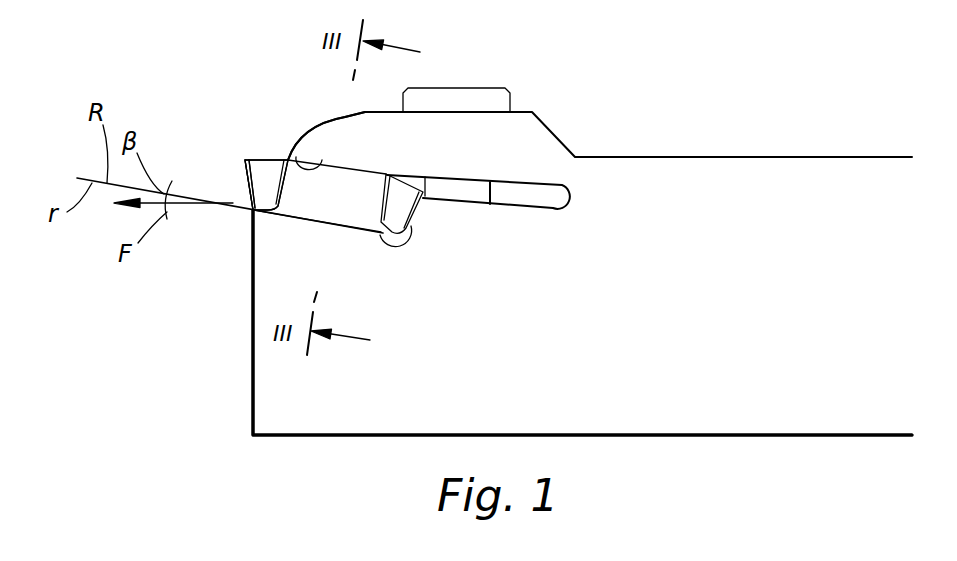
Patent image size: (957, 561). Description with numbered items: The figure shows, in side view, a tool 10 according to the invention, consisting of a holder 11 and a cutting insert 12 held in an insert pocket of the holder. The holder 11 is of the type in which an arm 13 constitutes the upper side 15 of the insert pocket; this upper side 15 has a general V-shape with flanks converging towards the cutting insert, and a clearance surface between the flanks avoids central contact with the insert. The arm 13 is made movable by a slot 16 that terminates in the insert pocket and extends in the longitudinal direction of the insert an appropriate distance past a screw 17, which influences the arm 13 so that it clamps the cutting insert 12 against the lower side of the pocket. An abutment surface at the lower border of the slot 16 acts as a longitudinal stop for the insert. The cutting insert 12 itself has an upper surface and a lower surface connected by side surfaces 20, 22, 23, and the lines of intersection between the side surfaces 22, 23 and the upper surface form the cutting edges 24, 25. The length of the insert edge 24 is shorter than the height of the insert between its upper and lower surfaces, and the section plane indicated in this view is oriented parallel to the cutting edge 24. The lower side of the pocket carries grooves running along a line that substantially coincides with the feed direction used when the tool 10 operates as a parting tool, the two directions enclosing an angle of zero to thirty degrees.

The tool 10 is at (160, 282).
The holder 11 is at (232, 364).
The cutting insert 12 is at (236, 125).
The arm 13 is at (370, 132).
The upper side 15 is at (302, 152).
The slot 16 is at (523, 193).
The screw 17 is at (487, 102).
The side surface 20 is at (306, 203).
The side surface 22 is at (247, 168).
The side surface 23 is at (413, 227).
The cutting edge 24 is at (245, 158).
The cutting edge 25 is at (423, 197).